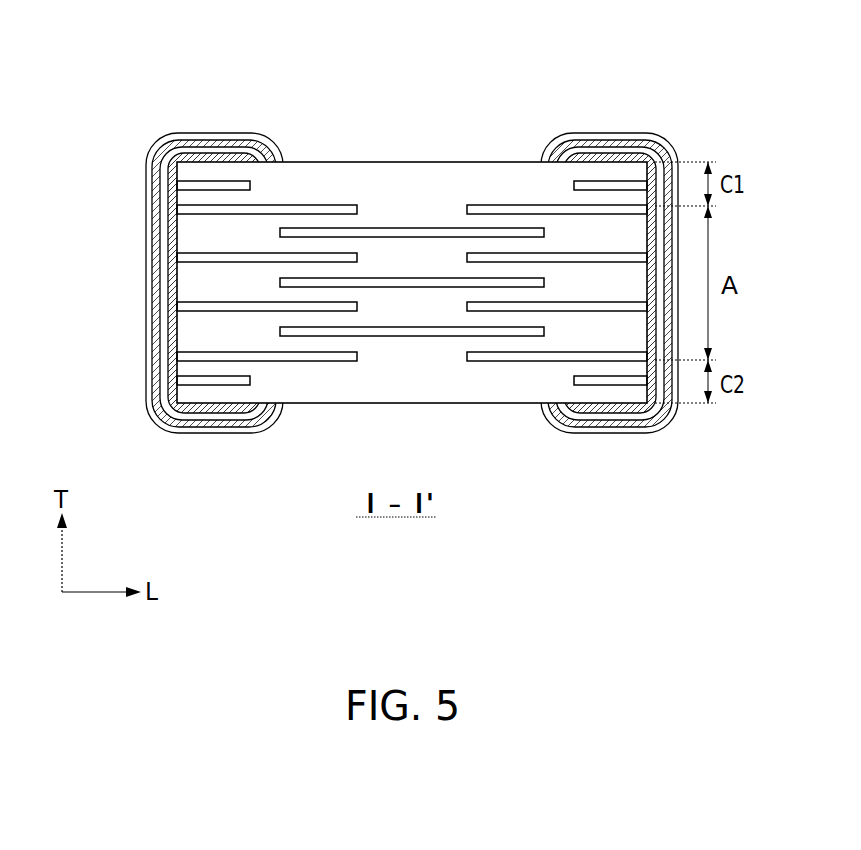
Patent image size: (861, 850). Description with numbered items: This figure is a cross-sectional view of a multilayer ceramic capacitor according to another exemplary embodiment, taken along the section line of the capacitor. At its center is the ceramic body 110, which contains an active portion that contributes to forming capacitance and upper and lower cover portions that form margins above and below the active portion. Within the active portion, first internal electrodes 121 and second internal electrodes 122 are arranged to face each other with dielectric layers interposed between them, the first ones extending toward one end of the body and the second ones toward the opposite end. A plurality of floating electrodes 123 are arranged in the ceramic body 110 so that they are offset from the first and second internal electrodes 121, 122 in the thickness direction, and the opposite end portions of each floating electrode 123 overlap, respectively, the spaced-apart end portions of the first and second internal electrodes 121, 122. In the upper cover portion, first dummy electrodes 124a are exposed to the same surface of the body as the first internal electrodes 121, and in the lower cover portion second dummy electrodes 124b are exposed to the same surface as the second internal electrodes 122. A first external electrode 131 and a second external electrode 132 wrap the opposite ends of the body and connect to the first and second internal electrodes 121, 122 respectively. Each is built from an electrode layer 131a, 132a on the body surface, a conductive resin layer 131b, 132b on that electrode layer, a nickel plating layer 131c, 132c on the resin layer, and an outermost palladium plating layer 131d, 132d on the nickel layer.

The ceramic body 110 is at (468, 154).
The first internal electrode 121 is at (180, 214).
The second internal electrode 122 is at (618, 215).
The floating electrode 123 is at (395, 228).
The first dummy electrode 124a is at (178, 186).
The second dummy electrode 124b is at (590, 188).
The first external electrode 131 is at (177, 217).
The electrode layer 131a is at (232, 228).
The conductive resin layer 131b is at (214, 149).
The nickel plating layer 131c is at (176, 143).
The palladium plating layer 131d is at (149, 165).
The second external electrode 132 is at (656, 217).
The electrode layer 132a is at (596, 228).
The conductive resin layer 132b is at (601, 149).
The nickel plating layer 132c is at (636, 144).
The palladium plating layer 132d is at (677, 142).